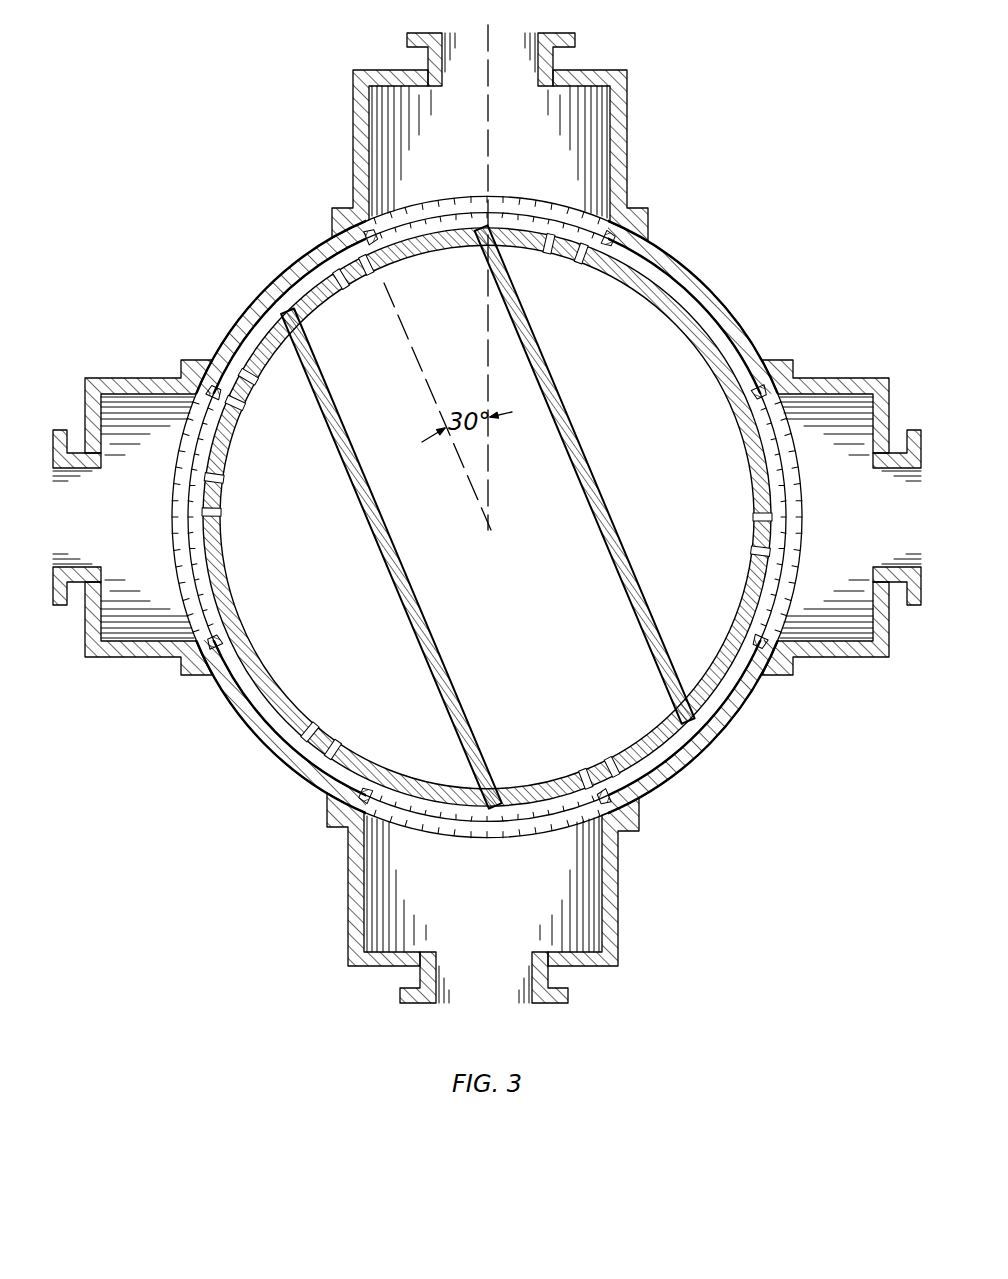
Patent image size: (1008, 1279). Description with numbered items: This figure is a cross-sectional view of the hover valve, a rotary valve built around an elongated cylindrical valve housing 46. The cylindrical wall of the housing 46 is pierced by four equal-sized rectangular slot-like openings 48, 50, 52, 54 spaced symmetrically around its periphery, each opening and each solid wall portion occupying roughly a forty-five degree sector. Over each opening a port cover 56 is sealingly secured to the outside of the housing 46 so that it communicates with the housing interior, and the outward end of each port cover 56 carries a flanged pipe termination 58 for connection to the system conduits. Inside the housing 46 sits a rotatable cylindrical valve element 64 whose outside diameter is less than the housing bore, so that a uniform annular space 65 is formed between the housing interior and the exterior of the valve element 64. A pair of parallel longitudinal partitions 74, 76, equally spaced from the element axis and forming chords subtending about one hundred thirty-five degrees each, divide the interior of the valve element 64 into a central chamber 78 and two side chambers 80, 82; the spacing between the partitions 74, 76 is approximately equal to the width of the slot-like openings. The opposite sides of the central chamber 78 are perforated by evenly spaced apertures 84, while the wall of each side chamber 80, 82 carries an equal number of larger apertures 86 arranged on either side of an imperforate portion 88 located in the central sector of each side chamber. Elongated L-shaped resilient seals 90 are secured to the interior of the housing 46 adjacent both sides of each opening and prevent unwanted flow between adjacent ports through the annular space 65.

The valve housing 46 is at (690, 262).
The slot-like opening 48 is at (500, 203).
The slot-like opening 50 is at (492, 832).
The slot-like opening 52 is at (180, 525).
The slot-like opening 54 is at (792, 523).
The port cover 56 is at (620, 109).
The flanged pipe termination 58 is at (576, 38).
The valve element 64 is at (722, 713).
The annular space 65 is at (707, 320).
The partition 74 is at (552, 384).
The partition 76 is at (349, 437).
The central chamber 78 is at (449, 381).
The side chamber 80 is at (336, 581).
The side chamber 82 is at (671, 477).
The aperture 84 is at (368, 275).
The aperture 86 is at (553, 262).
The imperforate portion 88 is at (718, 367).
The resilient seal 90 is at (335, 255).